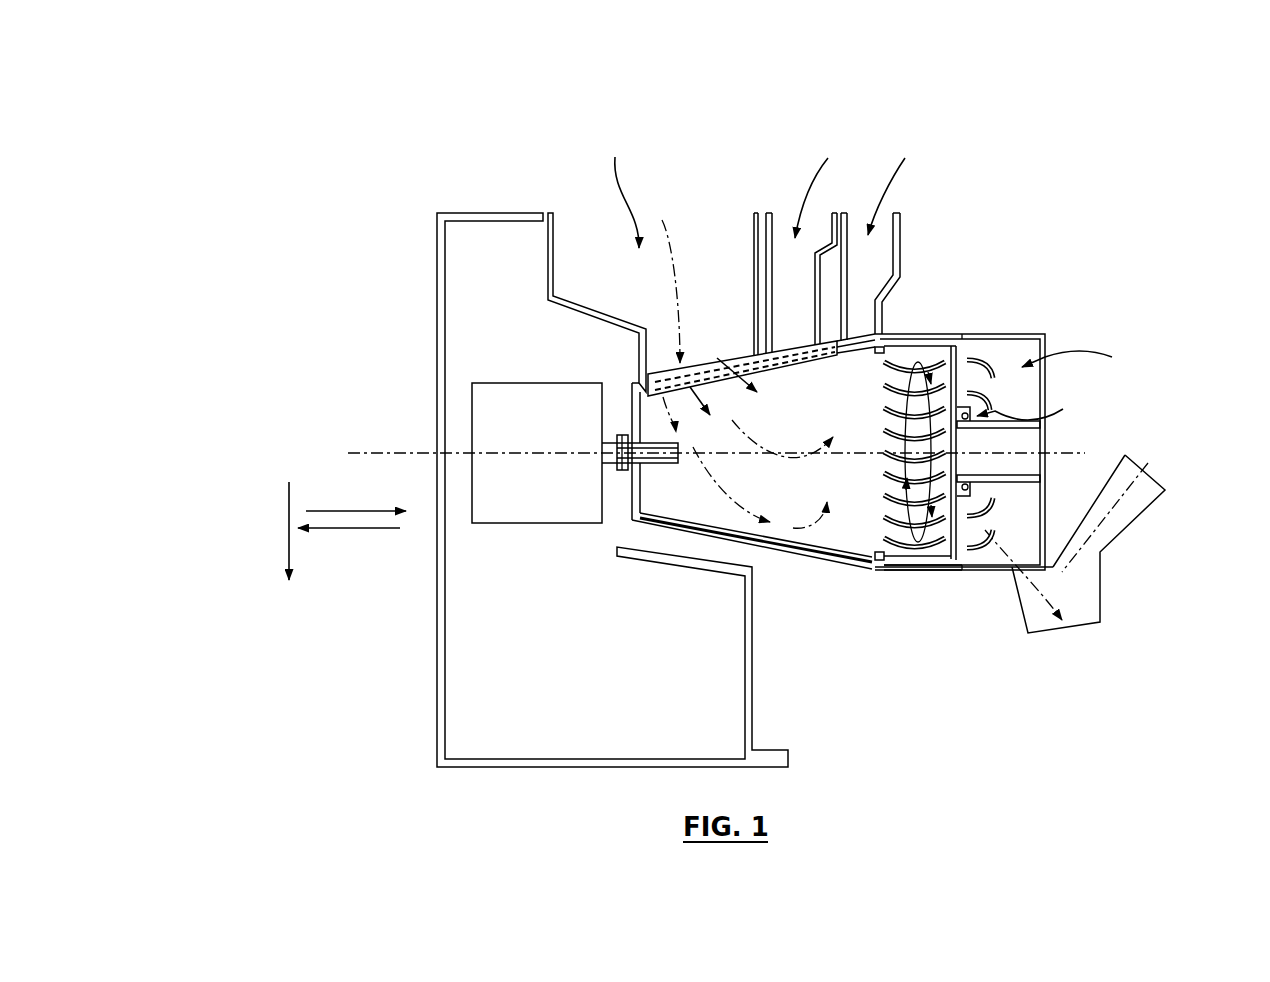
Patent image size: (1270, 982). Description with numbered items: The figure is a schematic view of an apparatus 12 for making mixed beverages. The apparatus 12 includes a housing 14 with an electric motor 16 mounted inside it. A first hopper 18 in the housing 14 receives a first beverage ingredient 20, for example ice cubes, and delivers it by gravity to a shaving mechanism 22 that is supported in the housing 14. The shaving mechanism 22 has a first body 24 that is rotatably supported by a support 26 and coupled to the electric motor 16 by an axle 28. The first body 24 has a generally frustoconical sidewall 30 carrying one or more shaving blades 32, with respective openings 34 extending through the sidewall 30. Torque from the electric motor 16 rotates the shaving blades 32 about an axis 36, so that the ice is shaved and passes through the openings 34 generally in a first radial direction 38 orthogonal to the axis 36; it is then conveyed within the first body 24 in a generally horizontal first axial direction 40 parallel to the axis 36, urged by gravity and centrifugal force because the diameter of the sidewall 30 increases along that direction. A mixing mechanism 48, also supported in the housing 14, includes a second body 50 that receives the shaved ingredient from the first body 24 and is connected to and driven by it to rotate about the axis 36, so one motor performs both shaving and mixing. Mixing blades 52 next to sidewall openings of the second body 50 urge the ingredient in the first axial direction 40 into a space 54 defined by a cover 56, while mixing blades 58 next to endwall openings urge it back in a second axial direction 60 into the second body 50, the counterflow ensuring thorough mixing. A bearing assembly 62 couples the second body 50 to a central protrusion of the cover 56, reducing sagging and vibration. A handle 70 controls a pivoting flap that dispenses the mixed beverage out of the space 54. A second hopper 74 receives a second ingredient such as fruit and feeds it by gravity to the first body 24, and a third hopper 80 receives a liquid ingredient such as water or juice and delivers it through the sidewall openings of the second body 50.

The apparatus for making mixed beverages 12 is at (387, 218).
The housing 14 is at (488, 215).
The electric motor 16 is at (515, 388).
The first hopper 18 is at (627, 190).
The first beverage ingredient 20 is at (678, 245).
The shaving mechanism 22 is at (790, 567).
The first body 24 is at (832, 558).
The support 26 is at (913, 337).
The axle 28 is at (653, 464).
The sidewall 30 is at (857, 357).
The shaving blades 32 is at (707, 395).
The openings 34 is at (787, 370).
The axis 36 is at (380, 452).
The first radial direction 38 is at (288, 520).
The first axial direction 40 is at (348, 510).
The mixing mechanism 48 is at (905, 577).
The second body 50 is at (937, 567).
The mixing blades 52 is at (945, 345).
The space 54 is at (1049, 452).
The cover 56 is at (1027, 336).
The mixing blades 58 is at (977, 357).
The second axial direction 60 is at (355, 530).
The bearing assembly 62 is at (1026, 442).
The handle 70 is at (1110, 528).
The second hopper 74 is at (801, 244).
The third hopper 80 is at (883, 237).